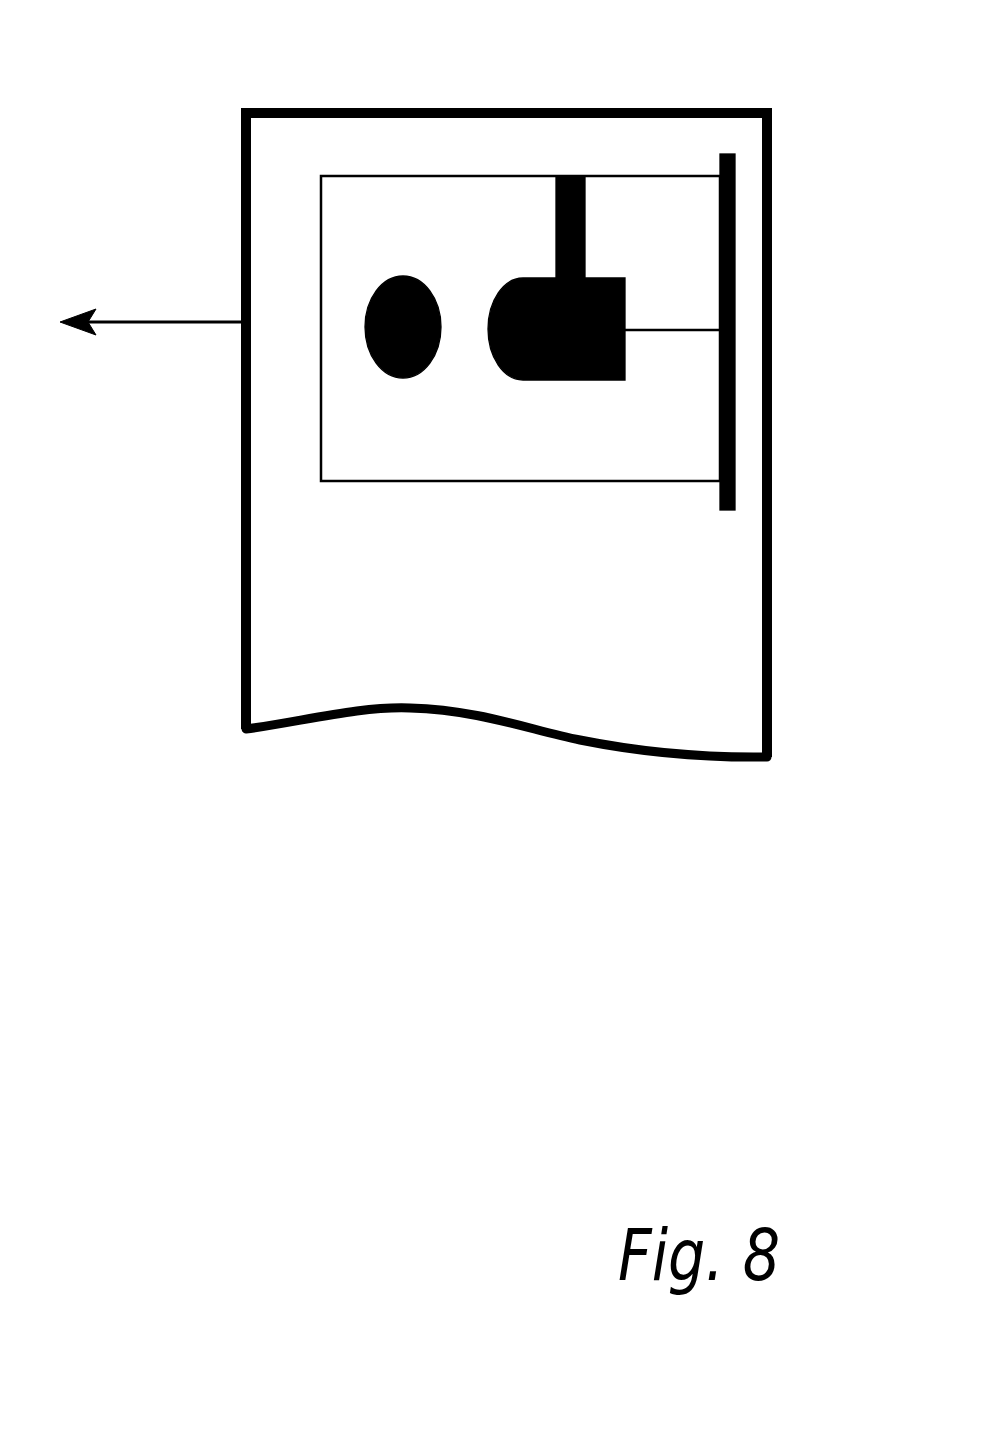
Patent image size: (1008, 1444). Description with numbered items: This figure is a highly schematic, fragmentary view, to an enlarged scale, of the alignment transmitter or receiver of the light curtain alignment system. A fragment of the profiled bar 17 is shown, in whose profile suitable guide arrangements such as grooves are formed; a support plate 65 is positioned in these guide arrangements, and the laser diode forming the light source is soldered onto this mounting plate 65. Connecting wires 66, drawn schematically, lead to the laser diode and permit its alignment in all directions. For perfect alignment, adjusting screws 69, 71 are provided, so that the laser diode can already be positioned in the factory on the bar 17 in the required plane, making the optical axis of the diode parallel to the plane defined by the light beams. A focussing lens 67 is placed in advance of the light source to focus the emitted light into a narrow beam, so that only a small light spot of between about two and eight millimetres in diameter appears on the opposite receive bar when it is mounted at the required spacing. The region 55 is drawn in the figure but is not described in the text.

The bar 17 is at (772, 655).
The pattern region 55 is at (472, 176).
The support plate 65 is at (735, 403).
The connecting wires 66 is at (660, 330).
The focussing lens 67 is at (403, 276).
The adjusting screw 69 is at (625, 292).
The adjusting screw 71 is at (585, 230).